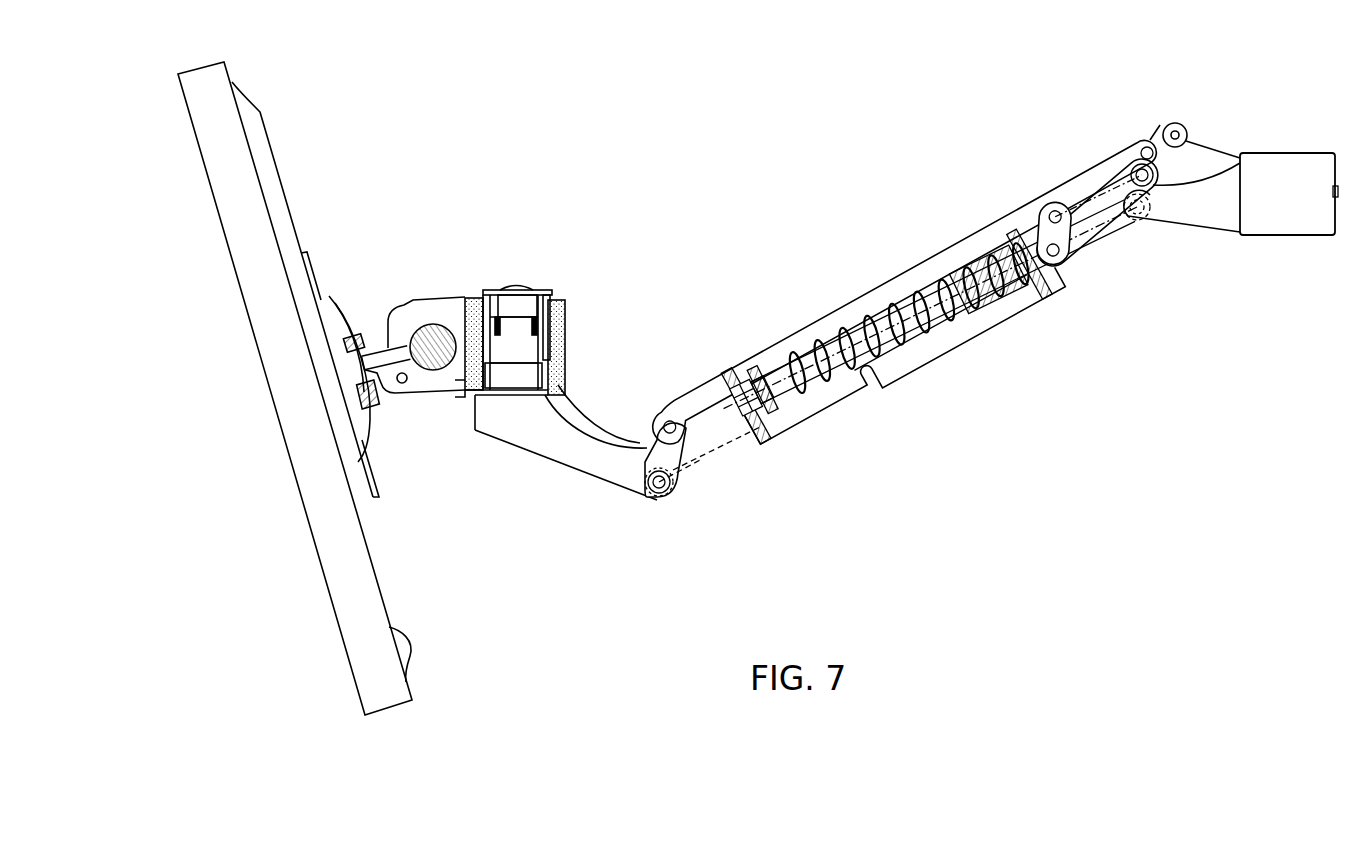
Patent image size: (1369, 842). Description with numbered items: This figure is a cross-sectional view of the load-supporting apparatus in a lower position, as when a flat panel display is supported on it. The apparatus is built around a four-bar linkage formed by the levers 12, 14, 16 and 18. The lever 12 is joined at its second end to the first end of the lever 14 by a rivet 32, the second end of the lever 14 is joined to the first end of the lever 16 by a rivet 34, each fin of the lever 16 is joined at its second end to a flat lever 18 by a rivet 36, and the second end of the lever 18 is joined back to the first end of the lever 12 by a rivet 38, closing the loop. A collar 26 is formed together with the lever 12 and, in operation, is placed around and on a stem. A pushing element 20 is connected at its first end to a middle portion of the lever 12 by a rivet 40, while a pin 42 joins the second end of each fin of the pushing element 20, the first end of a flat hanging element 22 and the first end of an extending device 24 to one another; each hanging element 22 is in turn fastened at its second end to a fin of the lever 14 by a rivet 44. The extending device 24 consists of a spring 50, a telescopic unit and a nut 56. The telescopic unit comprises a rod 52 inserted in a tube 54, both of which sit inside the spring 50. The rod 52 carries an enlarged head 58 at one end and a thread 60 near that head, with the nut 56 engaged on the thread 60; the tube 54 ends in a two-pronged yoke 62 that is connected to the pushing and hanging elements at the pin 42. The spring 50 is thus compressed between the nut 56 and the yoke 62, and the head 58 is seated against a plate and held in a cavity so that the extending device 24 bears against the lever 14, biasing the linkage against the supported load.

The lever 12 is at (1213, 182).
The lever 14 is at (897, 292).
The lever 16 is at (680, 462).
The lever 18 is at (718, 435).
The pushing element 20 is at (1090, 233).
The hanging element 22 is at (1037, 207).
The extending device 24 is at (960, 342).
The collar 26 is at (1297, 153).
The rivet 32 is at (1147, 147).
The rivet 34 is at (655, 414).
The rivet 36 is at (660, 496).
The rivet 38 is at (1133, 219).
The rivet 40 is at (1153, 180).
The pin 42 is at (1057, 257).
The rivet 44 is at (1055, 211).
The spring 50 is at (897, 350).
The rod 52 is at (845, 362).
The tube 54 is at (965, 290).
The nut 56 is at (774, 414).
The enlarged head 58 is at (748, 412).
The thread 60 is at (775, 367).
The yoke 62 is at (1030, 295).